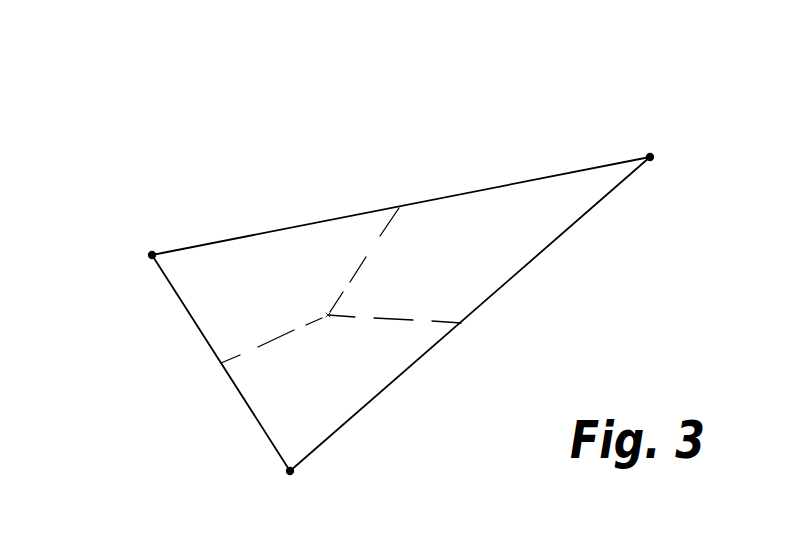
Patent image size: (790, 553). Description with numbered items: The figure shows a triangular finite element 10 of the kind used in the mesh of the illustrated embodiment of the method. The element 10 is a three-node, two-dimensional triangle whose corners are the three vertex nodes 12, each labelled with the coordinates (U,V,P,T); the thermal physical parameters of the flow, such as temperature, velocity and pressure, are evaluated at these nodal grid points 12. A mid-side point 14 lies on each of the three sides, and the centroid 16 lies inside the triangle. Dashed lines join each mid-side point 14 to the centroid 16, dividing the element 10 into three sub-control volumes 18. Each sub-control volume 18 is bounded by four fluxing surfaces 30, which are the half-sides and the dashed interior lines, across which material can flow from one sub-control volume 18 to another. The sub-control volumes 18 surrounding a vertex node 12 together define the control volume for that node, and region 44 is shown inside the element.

The triangular finite element 10 is at (583, 91).
The vertex node 12 is at (152, 255).
The mid-side point 14 is at (399, 208).
The centroid 16 is at (328, 315).
The sub-control volume 18 is at (253, 250).
The fluxing surface 30 is at (304, 222).
The sub-triangle / dashed subdivision line 44 is at (341, 293).